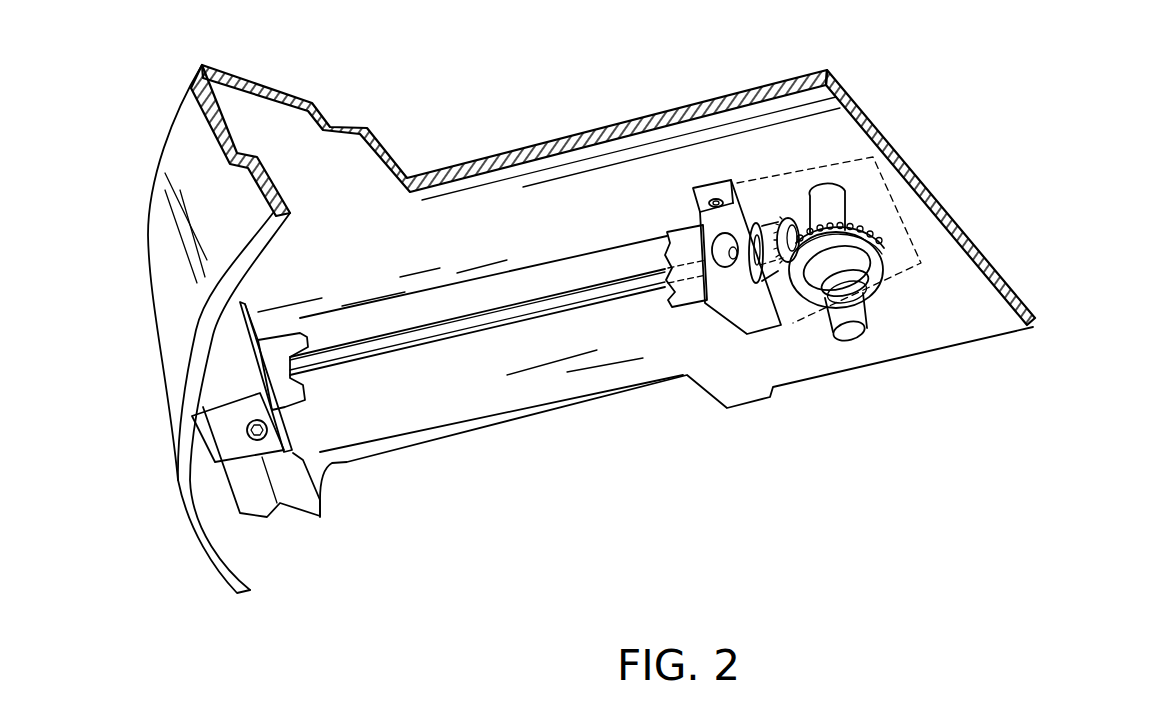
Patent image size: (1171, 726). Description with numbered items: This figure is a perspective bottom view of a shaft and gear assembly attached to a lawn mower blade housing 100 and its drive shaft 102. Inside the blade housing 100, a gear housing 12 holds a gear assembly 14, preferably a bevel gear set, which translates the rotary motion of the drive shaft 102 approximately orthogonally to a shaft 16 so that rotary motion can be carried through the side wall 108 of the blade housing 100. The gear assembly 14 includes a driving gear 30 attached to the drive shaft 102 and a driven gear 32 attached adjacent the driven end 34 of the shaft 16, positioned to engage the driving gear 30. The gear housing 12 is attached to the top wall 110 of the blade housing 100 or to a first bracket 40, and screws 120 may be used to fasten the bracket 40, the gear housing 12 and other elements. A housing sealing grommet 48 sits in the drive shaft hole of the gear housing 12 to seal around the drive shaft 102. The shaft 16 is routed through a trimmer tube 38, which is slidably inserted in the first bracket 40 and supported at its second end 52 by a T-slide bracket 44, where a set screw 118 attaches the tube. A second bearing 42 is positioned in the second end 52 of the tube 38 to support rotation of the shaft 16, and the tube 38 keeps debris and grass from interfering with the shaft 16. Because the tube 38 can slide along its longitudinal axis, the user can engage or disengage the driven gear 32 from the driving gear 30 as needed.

The gear housing 12 is at (857, 162).
The gear assembly 14 is at (789, 322).
The shaft 16 is at (698, 267).
The driving gear 30 is at (933, 242).
The driven gear 32 is at (782, 212).
The driven end 34 is at (747, 240).
The trimmer tube 38 is at (678, 242).
The first bracket 40 is at (716, 200).
The second bearing 42 is at (733, 240).
The T-slide bracket 44 is at (296, 455).
The housing sealing grommet 48 is at (956, 261).
The second end 52 is at (243, 530).
The blade housing 100 is at (223, 570).
The drive shaft 102 is at (847, 312).
The side wall 108 is at (190, 333).
The top wall 110 is at (467, 393).
The set screw 118 is at (283, 447).
The screws 120 is at (715, 235).